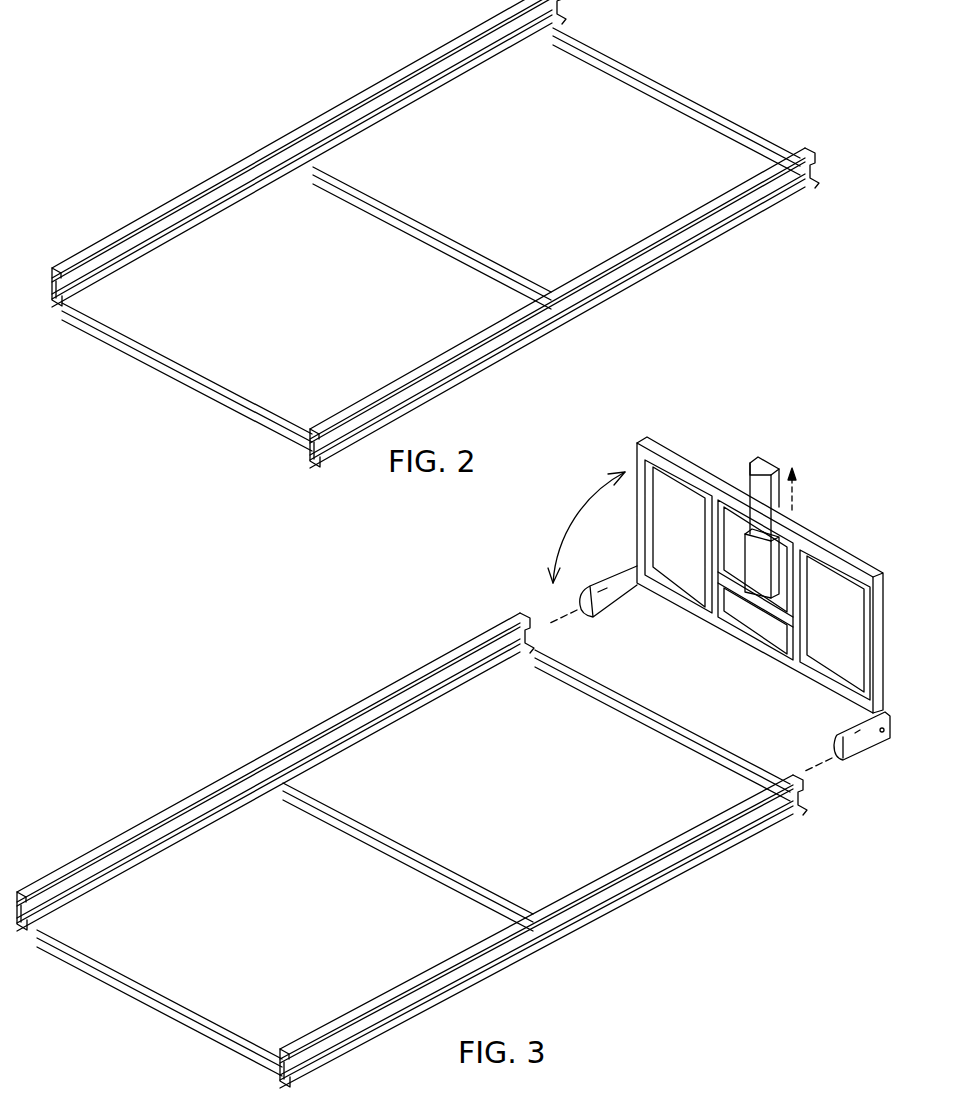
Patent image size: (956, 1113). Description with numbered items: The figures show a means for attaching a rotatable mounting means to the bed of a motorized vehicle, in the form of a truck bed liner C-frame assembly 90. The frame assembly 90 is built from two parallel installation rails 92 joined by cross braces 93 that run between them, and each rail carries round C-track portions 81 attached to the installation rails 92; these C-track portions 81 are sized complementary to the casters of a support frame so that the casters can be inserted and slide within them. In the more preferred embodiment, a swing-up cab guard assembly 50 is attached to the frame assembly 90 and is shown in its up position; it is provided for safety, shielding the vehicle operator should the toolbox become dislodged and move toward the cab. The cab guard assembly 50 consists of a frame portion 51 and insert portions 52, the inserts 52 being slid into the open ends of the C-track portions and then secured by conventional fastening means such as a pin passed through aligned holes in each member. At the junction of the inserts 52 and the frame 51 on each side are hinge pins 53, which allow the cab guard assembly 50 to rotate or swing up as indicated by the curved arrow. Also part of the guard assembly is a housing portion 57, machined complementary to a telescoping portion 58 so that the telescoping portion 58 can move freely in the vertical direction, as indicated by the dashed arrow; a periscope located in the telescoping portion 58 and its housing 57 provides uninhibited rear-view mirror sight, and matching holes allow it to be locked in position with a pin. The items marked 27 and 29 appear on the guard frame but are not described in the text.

In FIG. 2, the truck bed liner C-frame assembly 90 is at (333, 90).
In FIG. 3, the truck bed liner C-frame assembly 90 is at (365, 672).
In FIG. 2, the installation rails 92 is at (212, 178).
In FIG. 3, the installation rails 92 is at (207, 778).
In FIG. 2, the cross braces 93 is at (655, 88).
In FIG. 3, the cross braces 93 is at (572, 685).
In FIG. 2, the round C-track portions 81 is at (63, 305).
In FIG. 3, the swing-up cab guard assembly 50 is at (722, 455).
In FIG. 3, the frame portion 51 is at (825, 537).
In FIG. 3, the insert portions 52 is at (603, 602).
In FIG. 3, the hinge pins 53 is at (882, 735).
In FIG. 3, the housing portion 57 is at (760, 557).
In FIG. 3, the telescoping portion 58 is at (773, 463).
In FIG. 3, the cross bar 27 is at (768, 610).
In FIG. 3, the window opening 29 is at (807, 617).